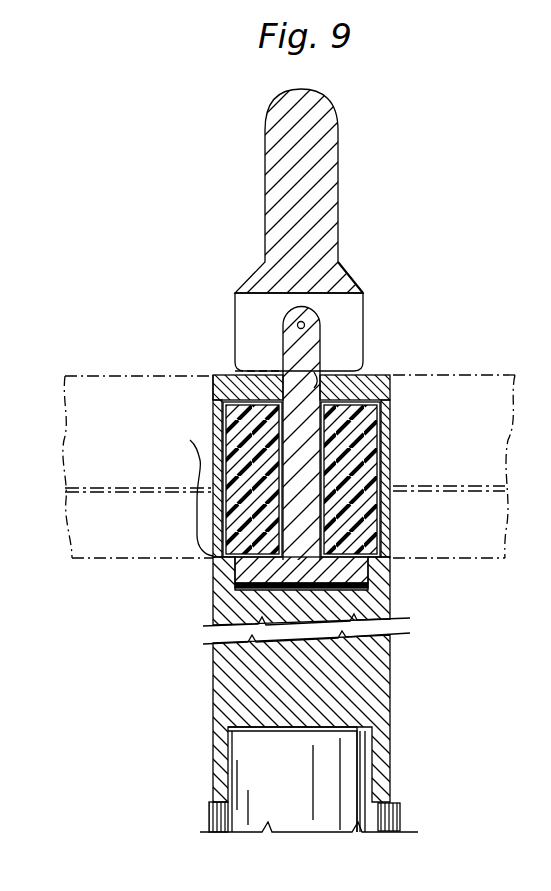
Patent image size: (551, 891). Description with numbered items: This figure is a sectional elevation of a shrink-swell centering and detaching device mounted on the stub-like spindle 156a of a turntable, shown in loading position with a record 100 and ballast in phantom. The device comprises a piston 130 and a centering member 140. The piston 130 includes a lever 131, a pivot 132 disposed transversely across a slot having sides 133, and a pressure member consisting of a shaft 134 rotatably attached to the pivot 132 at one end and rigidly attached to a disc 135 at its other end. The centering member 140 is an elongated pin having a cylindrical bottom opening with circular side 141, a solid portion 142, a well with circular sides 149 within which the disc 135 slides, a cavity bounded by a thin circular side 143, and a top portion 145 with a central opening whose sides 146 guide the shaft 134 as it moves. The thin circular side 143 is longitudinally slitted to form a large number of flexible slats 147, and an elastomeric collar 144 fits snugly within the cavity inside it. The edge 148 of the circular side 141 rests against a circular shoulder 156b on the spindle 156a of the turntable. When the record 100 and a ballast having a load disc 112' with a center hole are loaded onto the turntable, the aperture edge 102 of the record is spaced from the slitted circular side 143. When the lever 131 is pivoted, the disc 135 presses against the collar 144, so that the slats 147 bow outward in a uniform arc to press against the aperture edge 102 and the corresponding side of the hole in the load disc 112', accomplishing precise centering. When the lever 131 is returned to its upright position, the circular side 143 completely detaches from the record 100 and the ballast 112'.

The record 100 is at (103, 552).
The aperture edge 102 is at (213, 378).
The load disc 112' is at (298, 445).
The piston 130 is at (248, 324).
The lever 131 is at (322, 189).
The pivot 132 is at (347, 287).
The slot sides 133 is at (360, 327).
The shaft 134 is at (292, 342).
The disc 135 is at (388, 590).
The centering member 140 is at (266, 590).
The circular side 141 is at (392, 758).
The solid portion 142 is at (393, 652).
The thin circular side 143 is at (389, 468).
The elastomeric collar 144 is at (380, 442).
The top portion 145 is at (393, 376).
The central opening sides 146 is at (334, 362).
The flexible slats 147 is at (438, 530).
The edge 148 is at (400, 820).
The well sides 149 is at (392, 578).
The spindle 156a is at (357, 730).
The circular shoulder 156b is at (210, 806).